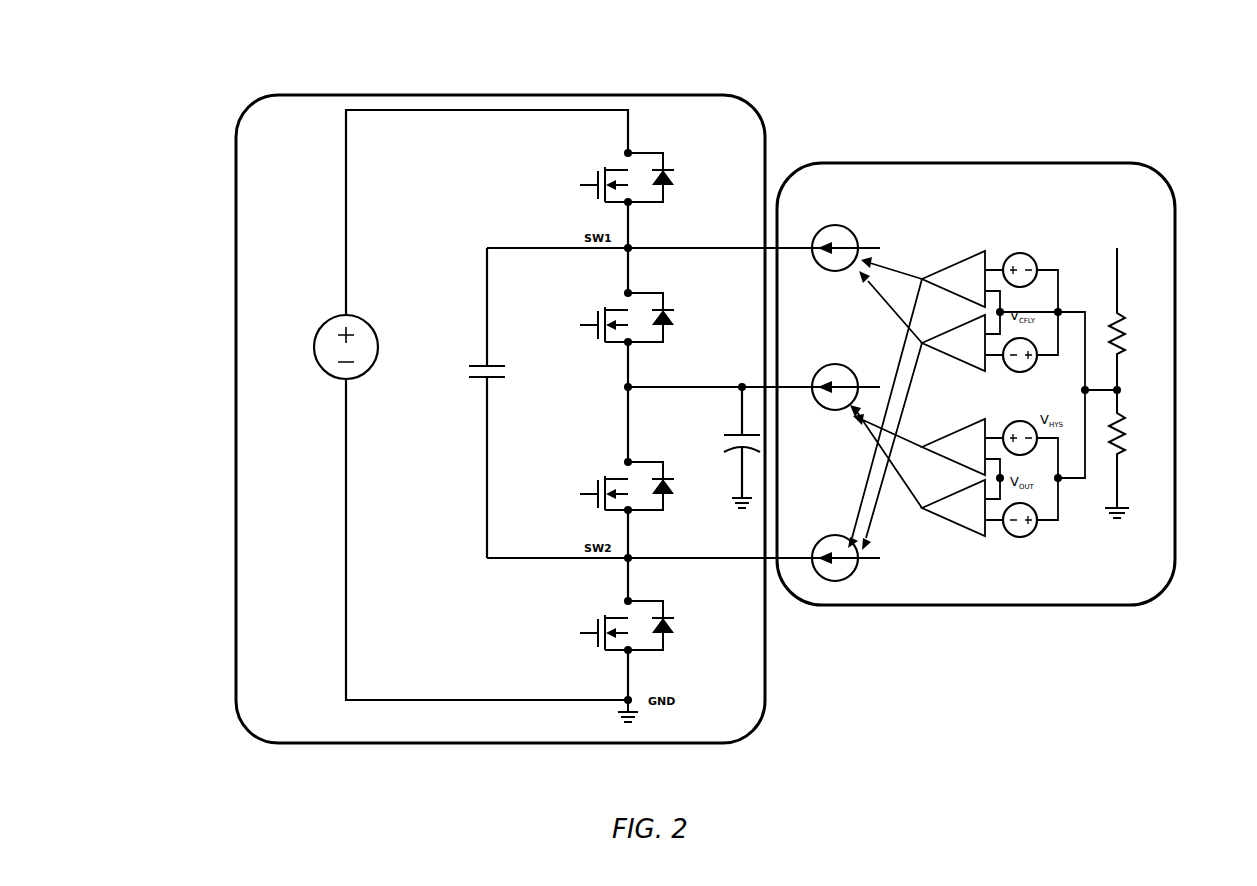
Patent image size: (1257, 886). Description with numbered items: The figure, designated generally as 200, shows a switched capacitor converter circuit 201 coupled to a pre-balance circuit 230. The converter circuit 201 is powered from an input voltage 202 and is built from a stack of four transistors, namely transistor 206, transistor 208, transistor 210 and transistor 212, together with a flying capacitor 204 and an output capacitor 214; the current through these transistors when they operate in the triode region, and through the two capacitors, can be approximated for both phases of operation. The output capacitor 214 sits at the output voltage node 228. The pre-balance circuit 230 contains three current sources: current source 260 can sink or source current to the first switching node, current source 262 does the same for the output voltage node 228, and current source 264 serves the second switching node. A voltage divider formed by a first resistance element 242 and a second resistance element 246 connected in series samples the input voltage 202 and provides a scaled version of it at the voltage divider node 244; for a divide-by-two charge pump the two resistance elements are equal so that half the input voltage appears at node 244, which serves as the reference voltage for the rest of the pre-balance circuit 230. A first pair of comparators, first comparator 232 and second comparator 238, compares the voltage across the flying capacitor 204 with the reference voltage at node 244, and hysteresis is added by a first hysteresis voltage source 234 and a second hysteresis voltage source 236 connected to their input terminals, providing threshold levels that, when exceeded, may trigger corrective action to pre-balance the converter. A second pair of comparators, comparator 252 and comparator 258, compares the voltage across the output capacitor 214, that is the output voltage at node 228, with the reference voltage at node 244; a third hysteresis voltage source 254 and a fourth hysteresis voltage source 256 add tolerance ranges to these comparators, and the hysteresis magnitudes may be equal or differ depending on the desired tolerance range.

The charge pump converter system 200 is at (258, 46).
The switched capacitor converter circuit 201 is at (690, 95).
The input voltage 202 is at (336, 372).
The flying capacitor 204 is at (480, 365).
The transistor Q1 206 is at (585, 183).
The transistor Q2 208 is at (598, 340).
The transistor Q3 210 is at (612, 465).
The transistor Q4 212 is at (598, 648).
The output capacitor 214 is at (722, 470).
The output voltage node 228 is at (655, 387).
The pre-balance circuit 230 is at (1050, 163).
The first comparator 232 is at (965, 255).
The first hysteresis voltage source 234 is at (1024, 253).
The second hysteresis voltage source 236 is at (1016, 372).
The second comparator 238 is at (968, 370).
The first resistance element 242 is at (1132, 320).
The voltage divider node 244 is at (1120, 374).
The second resistance element 246 is at (1132, 422).
The comparator 252 is at (968, 426).
The third hysteresis voltage source 254 is at (1082, 393).
The fourth hysteresis voltage source 256 is at (1020, 537).
The comparator 258 is at (960, 528).
The current source 260 is at (848, 228).
The current source 262 is at (847, 366).
The current source 264 is at (827, 537).